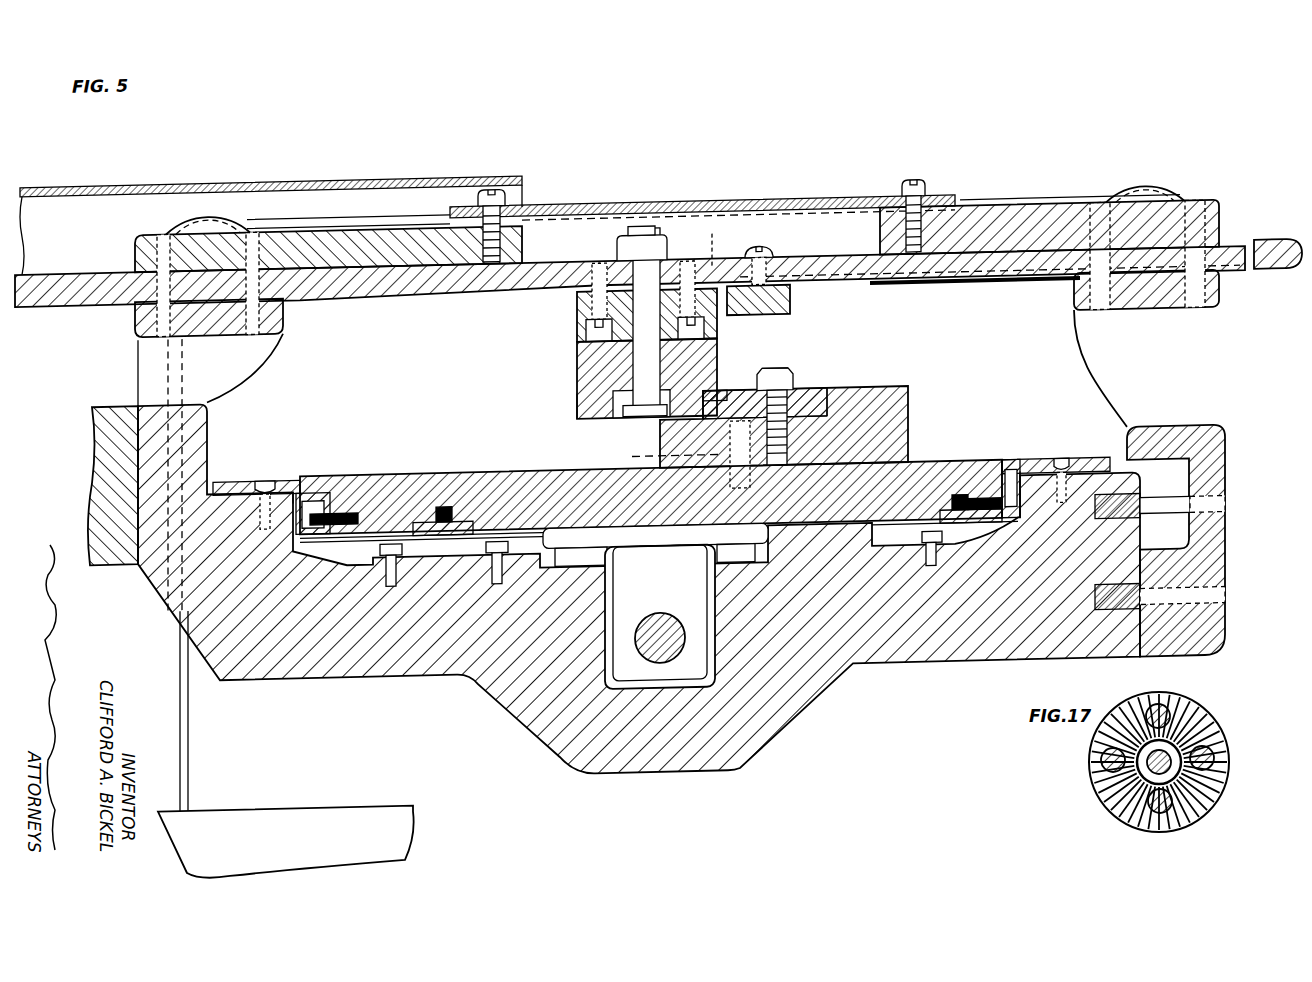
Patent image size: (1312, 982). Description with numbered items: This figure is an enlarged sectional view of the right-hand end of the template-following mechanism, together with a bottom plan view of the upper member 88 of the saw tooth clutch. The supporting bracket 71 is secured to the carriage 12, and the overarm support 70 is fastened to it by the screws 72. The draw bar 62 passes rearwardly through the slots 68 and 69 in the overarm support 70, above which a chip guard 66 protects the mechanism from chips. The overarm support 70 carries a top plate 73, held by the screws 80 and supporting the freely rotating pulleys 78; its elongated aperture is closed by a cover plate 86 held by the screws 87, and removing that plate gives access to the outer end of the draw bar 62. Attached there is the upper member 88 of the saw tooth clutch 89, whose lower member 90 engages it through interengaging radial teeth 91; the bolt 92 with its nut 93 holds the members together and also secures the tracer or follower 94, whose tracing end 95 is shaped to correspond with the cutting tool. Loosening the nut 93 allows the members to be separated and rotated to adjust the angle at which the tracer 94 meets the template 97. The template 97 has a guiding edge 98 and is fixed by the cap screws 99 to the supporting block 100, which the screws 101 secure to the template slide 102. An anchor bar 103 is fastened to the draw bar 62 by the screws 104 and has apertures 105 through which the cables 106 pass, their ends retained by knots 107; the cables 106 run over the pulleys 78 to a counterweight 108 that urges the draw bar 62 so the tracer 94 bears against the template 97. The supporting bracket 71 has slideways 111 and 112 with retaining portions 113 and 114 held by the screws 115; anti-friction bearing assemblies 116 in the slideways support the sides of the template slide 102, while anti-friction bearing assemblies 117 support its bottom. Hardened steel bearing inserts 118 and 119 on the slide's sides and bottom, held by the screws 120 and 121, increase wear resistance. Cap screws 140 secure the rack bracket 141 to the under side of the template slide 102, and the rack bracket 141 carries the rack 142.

In FIG. 5, the carriage 12 is at (110, 392).
In FIG. 5, the draw bar 62 is at (445, 293).
In FIG. 5, the chip guard 66 is at (350, 172).
In FIG. 5, the slot 68 is at (286, 320).
In FIG. 5, the slot 69 is at (1225, 290).
In FIG. 5, the overarm support 70 is at (1170, 437).
In FIG. 5, the supporting bracket 71 is at (995, 670).
In FIG. 5, the screw 72 is at (1170, 521).
In FIG. 5, the top plate 73 is at (1015, 213).
In FIG. 5, the pulley 78 is at (178, 215).
In FIG. 5, the screw 80 is at (1095, 322).
In FIG. 5, the cover plate 86 is at (642, 202).
In FIG. 5, the screw 87 is at (494, 185).
In FIG. 5, the upper member of saw tooth clutch 88 is at (577, 303).
In FIG. 17, the upper member of saw tooth clutch 88 is at (1089, 755).
In FIG. 5, the saw tooth clutch 89 is at (560, 371).
In FIG. 5, the lower member of saw tooth clutch 90 is at (577, 391).
In FIG. 5, the radial teeth 91 is at (584, 332).
In FIG. 17, the radial teeth 91 is at (1125, 815).
In FIG. 5, the bolt 92 is at (625, 421).
In FIG. 17, the bolt 92 is at (1112, 808).
In FIG. 5, the nut 93 is at (617, 250).
In FIG. 5, the tracer or follower 94 is at (640, 418).
In FIG. 5, the tracing end 95 is at (722, 392).
In FIG. 5, the template 97 is at (795, 395).
In FIG. 5, the guiding edge 98 is at (745, 392).
In FIG. 5, the cap screw 99 is at (792, 384).
In FIG. 5, the supporting block 100 is at (855, 392).
In FIG. 5, the screw 101 is at (916, 417).
In FIG. 5, the template slide 102 is at (534, 468).
In FIG. 5, the anchor bar 103 is at (790, 305).
In FIG. 5, the screw 104 is at (766, 253).
In FIG. 5, the aperture 105 is at (735, 319).
In FIG. 5, the cable 106 is at (414, 212).
In FIG. 5, the knot 107 is at (715, 238).
In FIG. 5, the counterweight 108 is at (350, 810).
In FIG. 5, the slideway 111 is at (297, 484).
In FIG. 5, the slideway 112 is at (1021, 480).
In FIG. 5, the retaining portion 113 is at (222, 472).
In FIG. 5, the retaining portion 114 is at (1090, 468).
In FIG. 5, the screw 115 is at (262, 470).
In FIG. 5, the anti-friction bearing assembly 116 is at (305, 533).
In FIG. 5, the anti-friction bearing assembly 117 is at (448, 542).
In FIG. 5, the hardened steel bearing insert 118 is at (318, 490).
In FIG. 5, the hardened steel bearing insert 119 is at (448, 501).
In FIG. 5, the screw 120 is at (345, 507).
In FIG. 5, the screw 121 is at (425, 516).
In FIG. 5, the cap screw 140 is at (612, 562).
In FIG. 5, the rack bracket 141 is at (722, 535).
In FIG. 5, the rack 142 is at (655, 620).